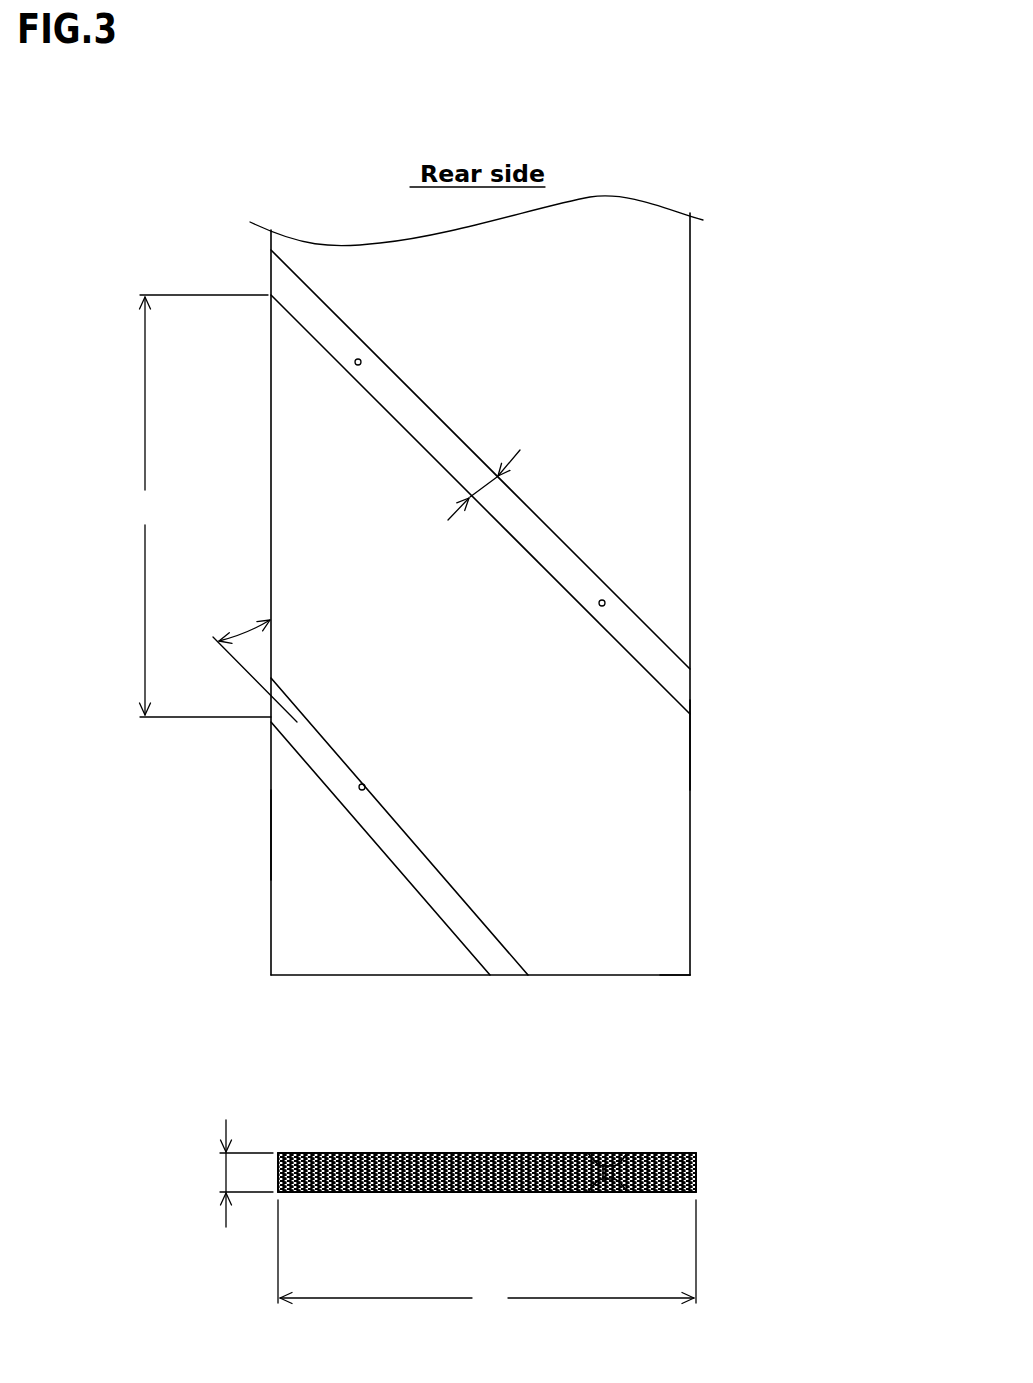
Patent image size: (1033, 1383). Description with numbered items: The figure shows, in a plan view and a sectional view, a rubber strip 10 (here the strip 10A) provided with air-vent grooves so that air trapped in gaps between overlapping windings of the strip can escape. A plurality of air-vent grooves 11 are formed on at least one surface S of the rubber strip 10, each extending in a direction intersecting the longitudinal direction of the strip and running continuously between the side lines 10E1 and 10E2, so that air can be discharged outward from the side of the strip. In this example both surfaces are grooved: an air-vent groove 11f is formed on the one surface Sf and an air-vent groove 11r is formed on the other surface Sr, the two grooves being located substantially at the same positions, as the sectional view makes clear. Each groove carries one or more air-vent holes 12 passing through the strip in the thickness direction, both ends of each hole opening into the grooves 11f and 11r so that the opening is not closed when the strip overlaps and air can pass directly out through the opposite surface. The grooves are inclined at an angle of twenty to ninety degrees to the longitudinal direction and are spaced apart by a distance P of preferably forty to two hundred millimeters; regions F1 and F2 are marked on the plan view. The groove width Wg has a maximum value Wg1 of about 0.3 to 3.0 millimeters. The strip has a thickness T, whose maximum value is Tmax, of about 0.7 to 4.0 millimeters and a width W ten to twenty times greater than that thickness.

The rubber strip 10 is at (559, 584).
The rubber strip 10A is at (740, 304).
The air-vent groove 11 is at (566, 708).
The air-vent groove on one surface 11f is at (631, 631).
The air-vent groove on other surface 11r is at (606, 1194).
The air-vent hole 12 is at (359, 359).
The groove width Wg is at (497, 477).
The maximum groove width Wg1 is at (665, 429).
The side line 10E1 is at (271, 836).
The side line 10E2 is at (692, 747).
The surface S is at (673, 922).
The one surface Sf is at (683, 1152).
The other surface Sr is at (668, 1193).
The distance between air-vent grooves P is at (204, 506).
The first region F1 is at (222, 473).
The second region F2 is at (790, 468).
The thickness T is at (225, 1173).
The maximum thickness Tmax is at (185, 1160).
The width W is at (487, 1256).